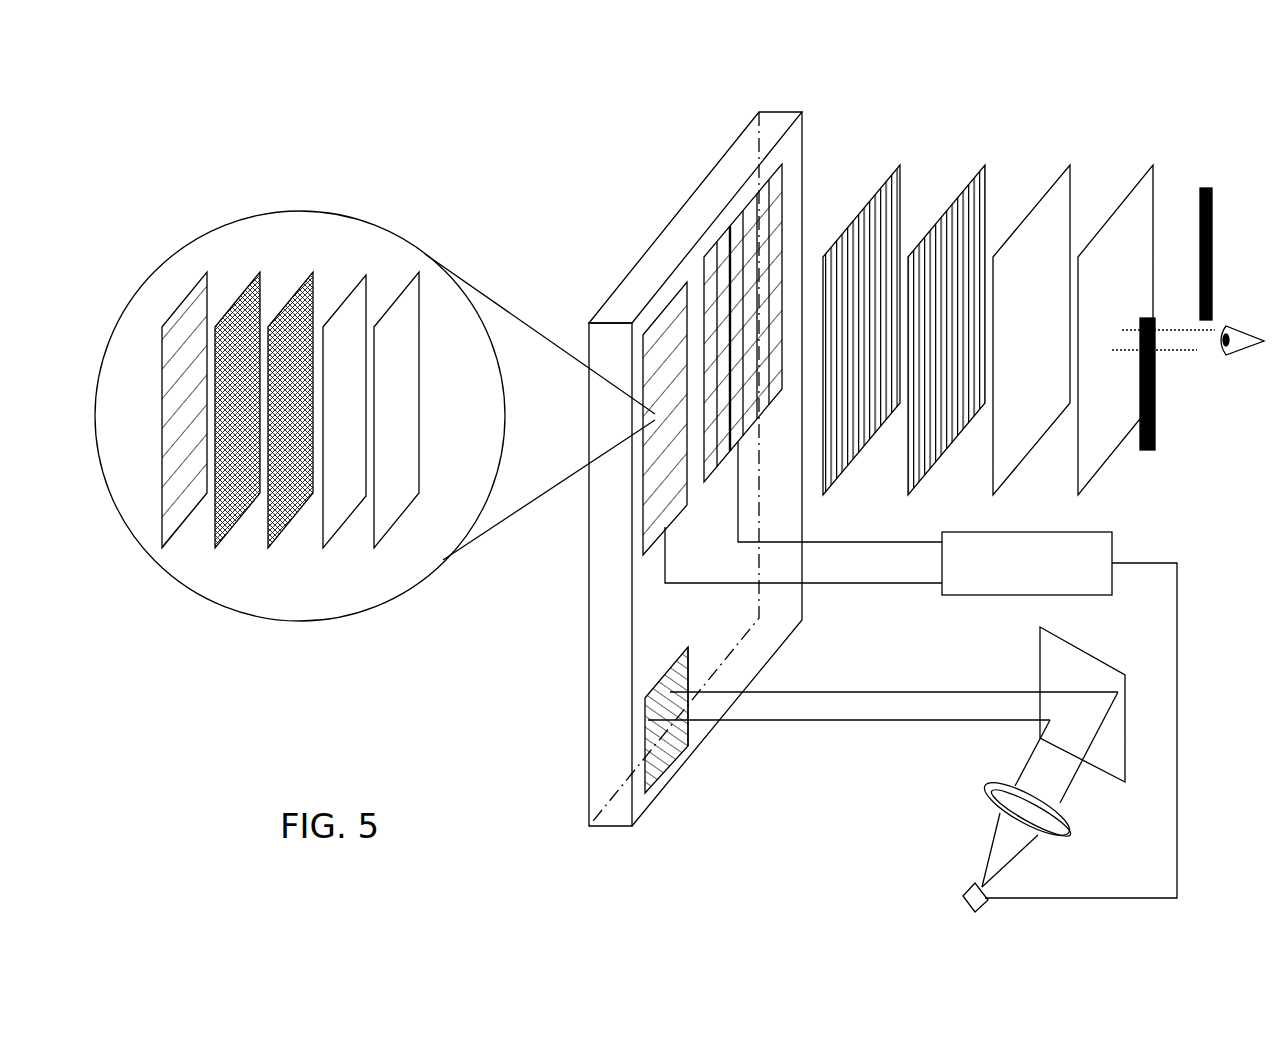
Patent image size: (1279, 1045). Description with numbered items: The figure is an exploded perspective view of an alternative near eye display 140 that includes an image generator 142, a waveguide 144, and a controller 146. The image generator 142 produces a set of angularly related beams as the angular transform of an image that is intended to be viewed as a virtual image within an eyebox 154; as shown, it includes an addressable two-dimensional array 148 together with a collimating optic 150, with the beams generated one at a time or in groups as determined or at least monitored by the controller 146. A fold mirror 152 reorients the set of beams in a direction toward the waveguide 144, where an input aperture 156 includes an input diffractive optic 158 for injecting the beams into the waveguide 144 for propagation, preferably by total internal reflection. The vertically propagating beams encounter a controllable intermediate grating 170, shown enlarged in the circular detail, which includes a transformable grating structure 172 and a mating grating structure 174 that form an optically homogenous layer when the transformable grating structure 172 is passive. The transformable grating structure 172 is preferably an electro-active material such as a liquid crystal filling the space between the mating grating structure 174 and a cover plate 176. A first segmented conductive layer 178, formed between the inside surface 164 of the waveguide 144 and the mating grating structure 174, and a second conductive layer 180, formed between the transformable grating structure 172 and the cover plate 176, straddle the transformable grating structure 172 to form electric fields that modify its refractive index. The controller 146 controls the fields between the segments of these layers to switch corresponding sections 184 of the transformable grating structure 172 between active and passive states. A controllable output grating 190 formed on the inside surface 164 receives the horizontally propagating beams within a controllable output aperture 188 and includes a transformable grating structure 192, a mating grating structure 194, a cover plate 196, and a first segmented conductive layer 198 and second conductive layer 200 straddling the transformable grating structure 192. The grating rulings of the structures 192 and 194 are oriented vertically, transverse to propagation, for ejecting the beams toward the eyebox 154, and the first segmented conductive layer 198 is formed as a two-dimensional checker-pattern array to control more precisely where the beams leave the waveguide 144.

The near eye display 140 is at (476, 112).
The image generator 142 is at (953, 804).
The waveguide 144 is at (698, 208).
The controller 146 is at (1059, 715).
The addressable two-dimensional array 148 is at (972, 887).
The collimating optic 150 is at (1067, 830).
The fold mirror 152 is at (1055, 660).
The eyebox 154 is at (1158, 423).
The input aperture 156 is at (686, 760).
The input diffractive optic 158 is at (689, 660).
The inside surface 164 is at (657, 603).
The controllable intermediate grating 170 is at (195, 232).
The transformable grating structure 172 is at (313, 293).
The mating grating structure 174 is at (260, 293).
The cover plate 176 is at (401, 413).
The first segmented conductive layer 178 is at (171, 437).
The second conductive layer 180 is at (347, 498).
The sections of the transformable grating structure 184 is at (667, 330).
The controllable output aperture 188 is at (790, 205).
The controllable output grating 190 is at (995, 114).
The transformable grating structure 192 is at (985, 216).
The mating grating structure 194 is at (897, 216).
The cover plate 196 is at (1142, 217).
The first segmented conductive layer 198 is at (773, 283).
The second conductive layer 200 is at (1023, 432).